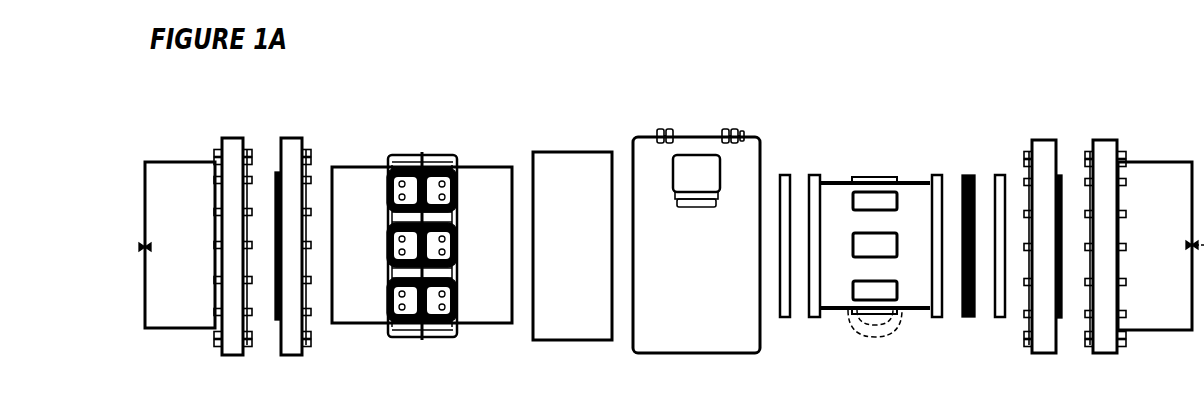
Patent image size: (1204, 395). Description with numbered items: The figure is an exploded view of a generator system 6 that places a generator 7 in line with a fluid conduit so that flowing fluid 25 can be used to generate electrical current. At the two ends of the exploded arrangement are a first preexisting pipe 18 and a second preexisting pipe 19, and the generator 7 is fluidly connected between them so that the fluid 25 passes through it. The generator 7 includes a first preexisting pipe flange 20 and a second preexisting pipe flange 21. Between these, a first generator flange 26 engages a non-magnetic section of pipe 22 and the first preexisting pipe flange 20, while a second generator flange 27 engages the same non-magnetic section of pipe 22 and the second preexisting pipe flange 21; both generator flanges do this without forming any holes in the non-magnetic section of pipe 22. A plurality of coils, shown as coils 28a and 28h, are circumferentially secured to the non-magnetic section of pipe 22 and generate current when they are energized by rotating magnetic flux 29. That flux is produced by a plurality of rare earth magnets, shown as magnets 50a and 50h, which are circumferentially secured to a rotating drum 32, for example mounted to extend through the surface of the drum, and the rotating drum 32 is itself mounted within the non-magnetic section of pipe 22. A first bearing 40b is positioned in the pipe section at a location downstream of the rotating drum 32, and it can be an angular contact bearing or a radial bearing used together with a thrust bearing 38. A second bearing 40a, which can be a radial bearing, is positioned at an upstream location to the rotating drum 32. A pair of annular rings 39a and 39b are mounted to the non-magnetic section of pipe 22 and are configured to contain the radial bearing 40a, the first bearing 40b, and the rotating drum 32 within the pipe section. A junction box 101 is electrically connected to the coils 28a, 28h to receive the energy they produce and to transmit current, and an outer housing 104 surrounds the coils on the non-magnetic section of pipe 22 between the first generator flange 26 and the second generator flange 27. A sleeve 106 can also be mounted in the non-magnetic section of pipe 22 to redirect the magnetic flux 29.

The generator system 6 is at (140, 120).
The generator 7 is at (962, 100).
The first preexisting pipe 18 is at (188, 162).
The second preexisting pipe 19 is at (1154, 162).
The first preexisting pipe flange 20 is at (236, 138).
The second preexisting pipe flange 21 is at (1105, 140).
The non-magnetic section of pipe 22 is at (500, 167).
The fluid 25 is at (128, 247).
The first generator flange 26 is at (293, 138).
The second generator flange 27 is at (1045, 140).
The coil 28a is at (436, 155).
The coil 28h is at (390, 182).
The magnetic flux 29 is at (862, 338).
The rotating drum 32 is at (838, 310).
The thrust bearing 38 is at (969, 175).
The annular ring 39a is at (785, 175).
The annular ring 39b is at (1000, 175).
The second bearing 40a is at (814, 175).
The first bearing 40b is at (937, 175).
The rare earth magnet 50a is at (875, 177).
The rare earth magnet 50h is at (853, 196).
The junction box 101 is at (692, 155).
The outer housing 104 is at (710, 130).
The sleeve 106 is at (575, 152).